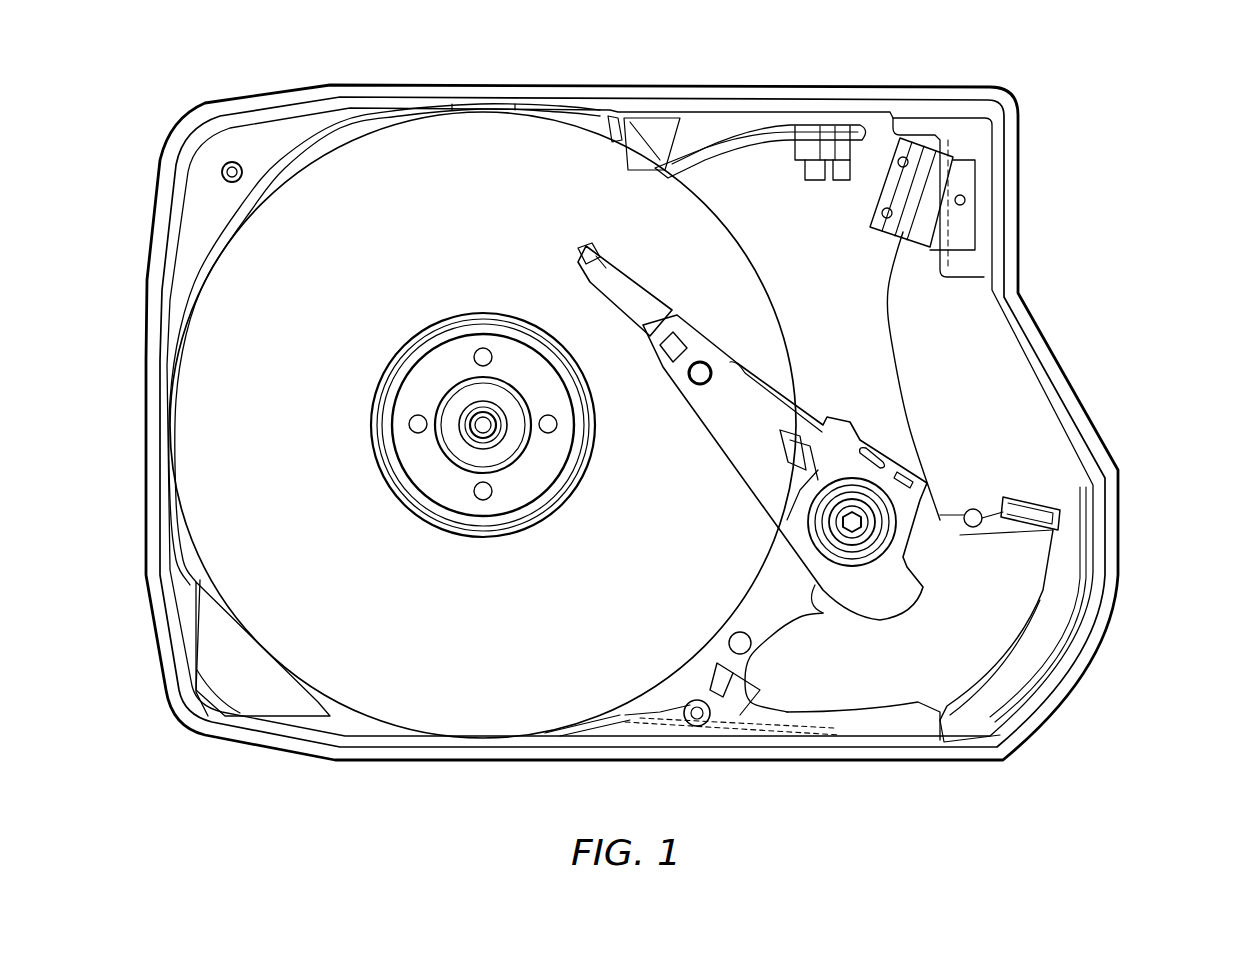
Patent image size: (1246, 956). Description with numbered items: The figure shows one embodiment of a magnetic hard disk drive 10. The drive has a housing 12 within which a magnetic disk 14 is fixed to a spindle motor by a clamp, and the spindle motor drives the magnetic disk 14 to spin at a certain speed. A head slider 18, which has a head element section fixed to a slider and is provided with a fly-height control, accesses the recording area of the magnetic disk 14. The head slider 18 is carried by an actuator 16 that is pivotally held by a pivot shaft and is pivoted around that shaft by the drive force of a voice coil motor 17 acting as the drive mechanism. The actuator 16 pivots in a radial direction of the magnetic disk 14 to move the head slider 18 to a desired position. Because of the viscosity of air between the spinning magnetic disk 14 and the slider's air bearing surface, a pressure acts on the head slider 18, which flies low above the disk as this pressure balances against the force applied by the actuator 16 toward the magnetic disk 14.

The magnetic hard disk drive 10 is at (1112, 155).
The housing 12 is at (1013, 240).
The magnetic disk 14 is at (452, 148).
The actuator 16 is at (870, 413).
The voice coil motor 17 is at (1028, 648).
The head slider 18 is at (595, 280).